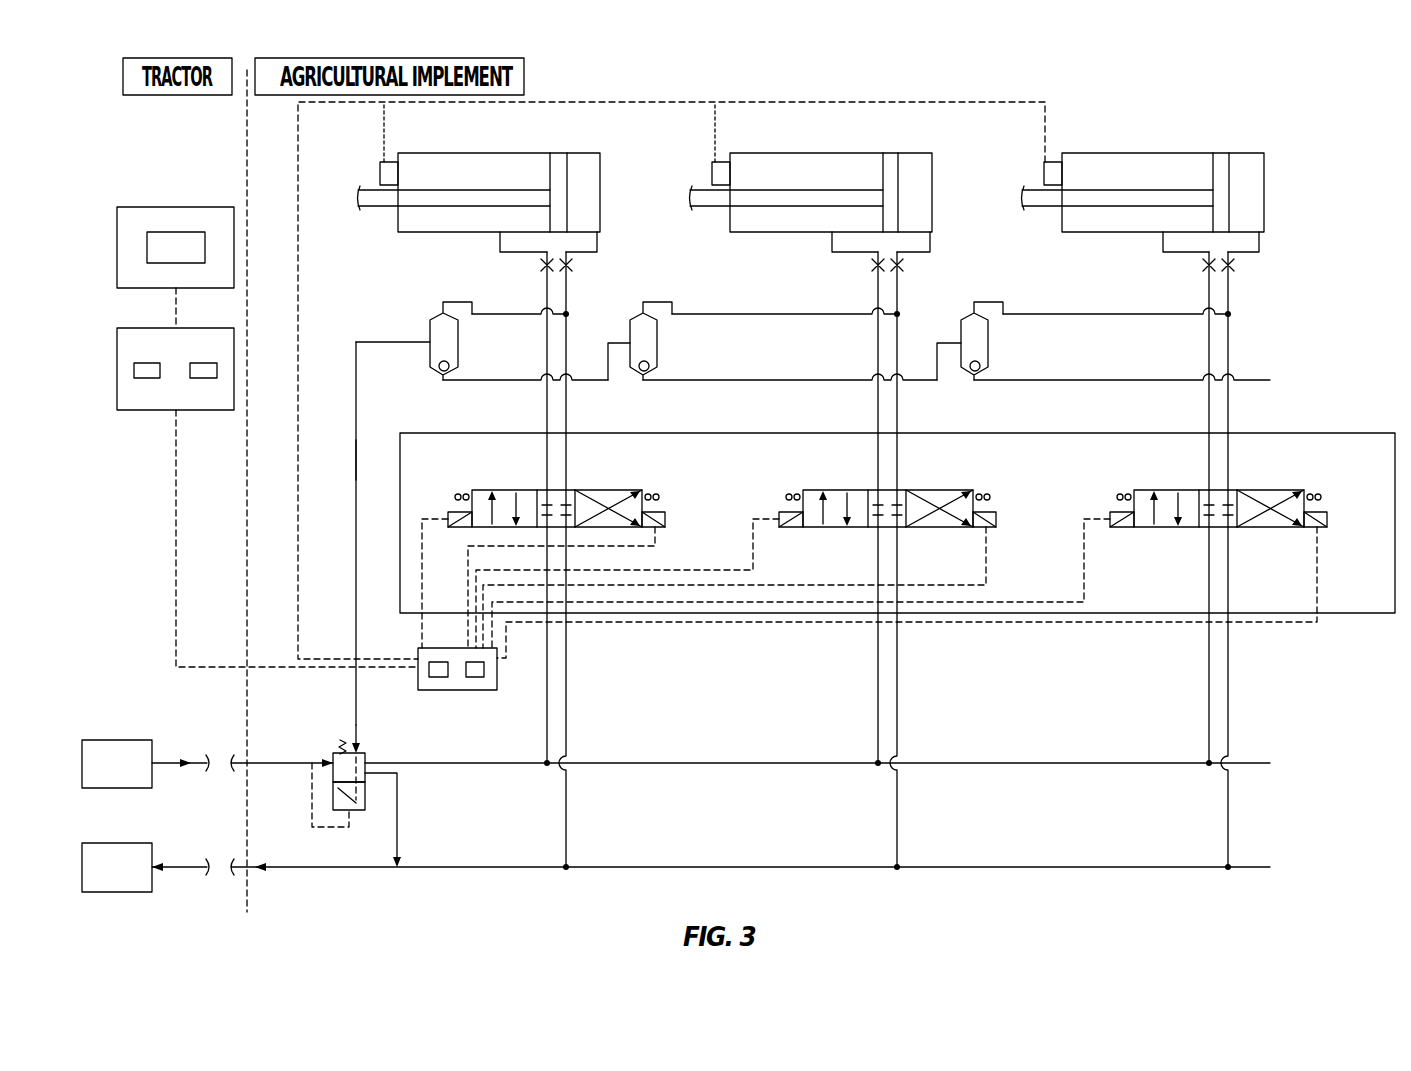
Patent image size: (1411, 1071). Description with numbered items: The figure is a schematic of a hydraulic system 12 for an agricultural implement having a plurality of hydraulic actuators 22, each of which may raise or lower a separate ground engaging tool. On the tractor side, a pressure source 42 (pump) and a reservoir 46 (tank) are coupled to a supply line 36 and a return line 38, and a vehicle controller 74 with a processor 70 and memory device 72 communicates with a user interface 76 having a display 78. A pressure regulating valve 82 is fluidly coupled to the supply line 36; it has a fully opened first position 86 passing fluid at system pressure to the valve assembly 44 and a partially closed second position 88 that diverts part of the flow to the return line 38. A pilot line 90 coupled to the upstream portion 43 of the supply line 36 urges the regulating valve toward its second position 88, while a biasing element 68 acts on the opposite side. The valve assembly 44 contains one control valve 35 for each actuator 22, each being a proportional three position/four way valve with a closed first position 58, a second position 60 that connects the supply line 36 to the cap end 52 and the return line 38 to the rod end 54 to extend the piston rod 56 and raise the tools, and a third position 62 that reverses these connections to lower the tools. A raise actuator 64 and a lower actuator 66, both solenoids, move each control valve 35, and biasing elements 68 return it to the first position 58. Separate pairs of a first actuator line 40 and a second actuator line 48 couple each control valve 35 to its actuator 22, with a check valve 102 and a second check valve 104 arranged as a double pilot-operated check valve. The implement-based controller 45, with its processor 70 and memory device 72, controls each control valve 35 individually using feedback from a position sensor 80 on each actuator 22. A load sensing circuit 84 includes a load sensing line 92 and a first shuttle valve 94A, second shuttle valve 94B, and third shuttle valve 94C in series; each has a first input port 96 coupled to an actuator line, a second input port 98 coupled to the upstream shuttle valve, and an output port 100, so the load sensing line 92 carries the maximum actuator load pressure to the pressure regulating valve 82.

The hydraulic system 12 is at (797, 90).
The hydraulic actuator 22 is at (458, 153).
The control valve 35 is at (576, 490).
The supply line 36 is at (806, 763).
The return line 38 is at (806, 867).
The first actuator line 40 is at (546, 420).
The pressure source 42 is at (117, 740).
The upstream portion of the supply line 43 is at (271, 763).
The valve assembly 44 is at (1295, 433).
The controller 45 is at (480, 690).
The reservoir 46 is at (117, 893).
The second actuator line 48 is at (567, 420).
The cap end 52 is at (590, 144).
The rod end 54 is at (460, 234).
The piston rod 56 is at (365, 192).
The first position 58 is at (530, 490).
The second position 60 is at (616, 492).
The third position 62 is at (490, 490).
The raise actuator 64 is at (668, 515).
The lower actuator 66 is at (461, 528).
The biasing element 68 is at (340, 745).
The processor 70 is at (146, 363).
The memory device 72 is at (203, 363).
The vehicle controller 74 is at (117, 372).
The user interface 76 is at (117, 247).
The display 78 is at (167, 232).
The position sensor 80 is at (390, 162).
The pressure regulating valve 82 is at (360, 752).
The load sensing circuit 84 is at (352, 402).
The first position 86 is at (366, 762).
The second position 88 is at (367, 805).
The pilot line 90 is at (312, 800).
The load sensing line 92 is at (352, 460).
The first shuttle valve 94A is at (430, 325).
The second shuttle valve 94B is at (630, 325).
The third shuttle valve 94C is at (961, 325).
The first input port 96 is at (496, 316).
The second input port 98 is at (456, 382).
The output port 100 is at (394, 344).
The check valve 102 is at (572, 266).
The second check valve 104 is at (542, 266).